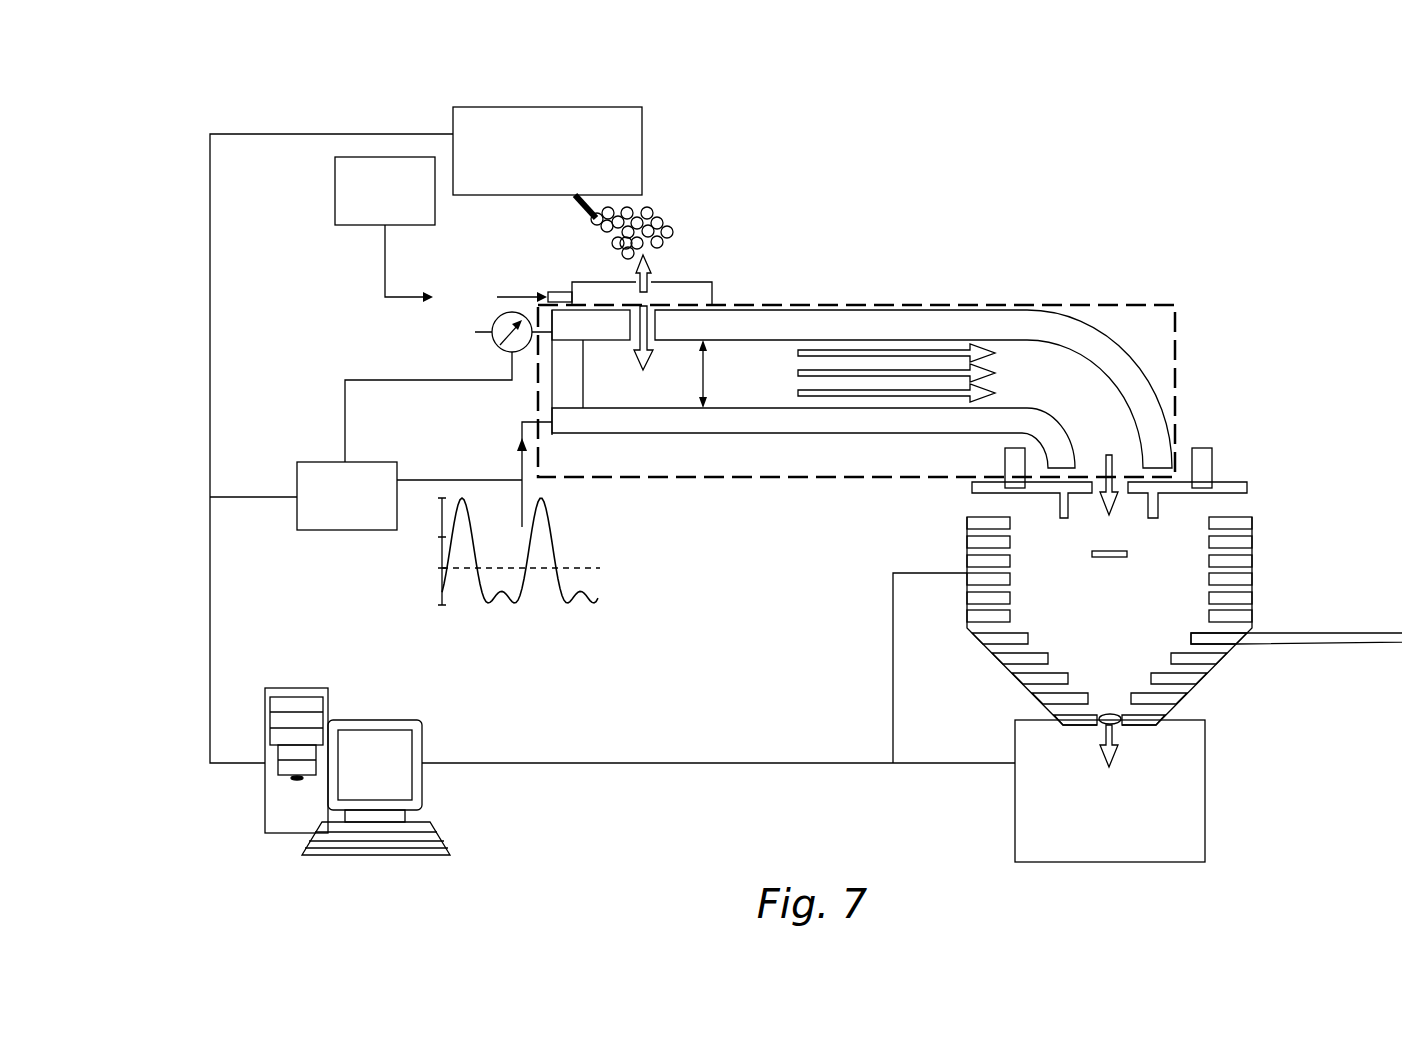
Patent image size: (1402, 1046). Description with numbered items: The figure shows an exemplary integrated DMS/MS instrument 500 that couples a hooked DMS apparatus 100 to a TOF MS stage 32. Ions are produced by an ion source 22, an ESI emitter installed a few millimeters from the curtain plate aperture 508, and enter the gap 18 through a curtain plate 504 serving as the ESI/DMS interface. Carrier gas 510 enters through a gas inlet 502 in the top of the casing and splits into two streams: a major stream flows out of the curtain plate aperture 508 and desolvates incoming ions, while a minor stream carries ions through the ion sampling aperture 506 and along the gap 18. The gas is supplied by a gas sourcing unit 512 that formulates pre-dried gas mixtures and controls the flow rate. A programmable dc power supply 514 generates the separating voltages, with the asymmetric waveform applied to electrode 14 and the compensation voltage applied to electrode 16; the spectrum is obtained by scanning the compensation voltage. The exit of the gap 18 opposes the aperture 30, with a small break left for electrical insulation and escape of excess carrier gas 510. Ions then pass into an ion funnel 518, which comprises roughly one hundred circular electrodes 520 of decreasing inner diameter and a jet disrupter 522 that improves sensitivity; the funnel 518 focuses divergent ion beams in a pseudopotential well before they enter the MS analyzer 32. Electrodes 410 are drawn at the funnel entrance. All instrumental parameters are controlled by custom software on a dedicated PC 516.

The integrated DMS/MS instrument 500 is at (1235, 125).
The ion source 22 is at (533, 165).
The gas sourcing unit 512 is at (362, 204).
The programmable dc power supply 514 is at (322, 508).
The dedicated PC 516 is at (352, 778).
The TOF MS stage 32 is at (1131, 831).
The hooked DMS apparatus 100 is at (847, 292).
The gas inlet 502 is at (556, 292).
The curtain plate 504 is at (598, 282).
The ion sampling aperture 506 is at (654, 310).
The curtain plate aperture 508 is at (658, 282).
The carrier gas 510 is at (737, 386).
The gap 18 is at (702, 382).
The electrode 14 is at (808, 435).
The electrode 16 is at (1100, 335).
The aperture 30 is at (1117, 470).
The outlet electrodes 410 is at (1214, 462).
The jet disrupter 522 is at (1127, 552).
The ion funnel 518 is at (1184, 623).
The circular electrodes 520 is at (1202, 662).